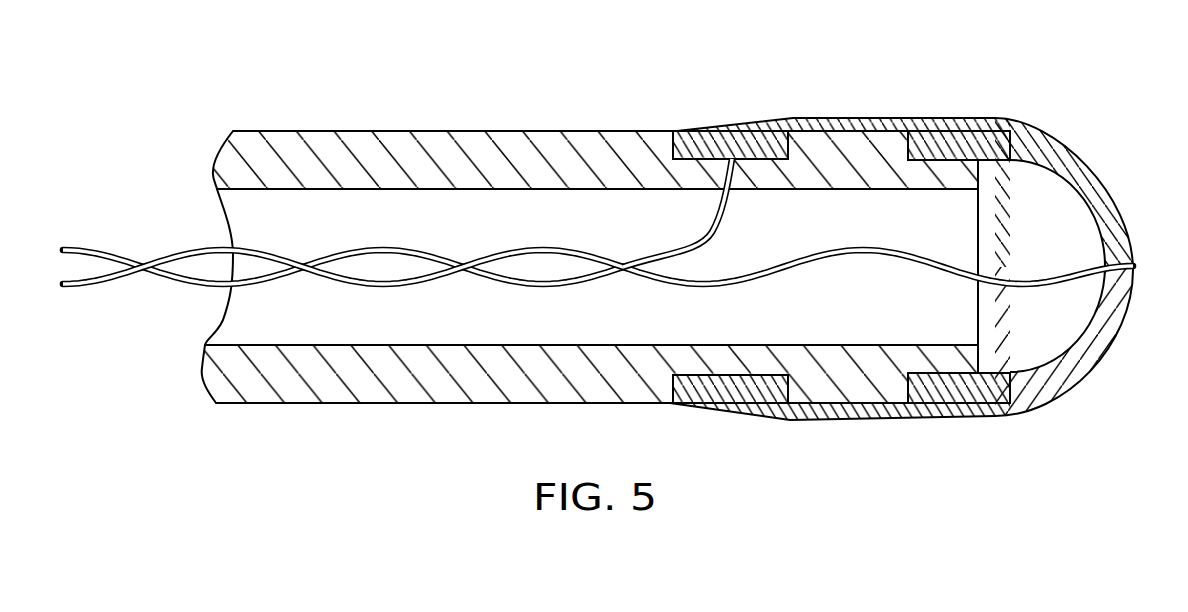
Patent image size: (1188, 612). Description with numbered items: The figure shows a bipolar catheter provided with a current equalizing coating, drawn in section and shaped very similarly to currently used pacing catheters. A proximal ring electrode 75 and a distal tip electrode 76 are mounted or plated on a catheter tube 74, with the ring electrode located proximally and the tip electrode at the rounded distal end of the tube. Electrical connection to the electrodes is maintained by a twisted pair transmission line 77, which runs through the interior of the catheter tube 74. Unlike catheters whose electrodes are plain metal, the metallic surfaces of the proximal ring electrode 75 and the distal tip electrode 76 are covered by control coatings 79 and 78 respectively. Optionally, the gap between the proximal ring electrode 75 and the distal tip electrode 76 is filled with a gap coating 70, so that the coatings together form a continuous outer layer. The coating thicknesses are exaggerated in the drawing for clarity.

The gap coating 70 is at (857, 116).
The catheter tube 74 is at (226, 142).
The proximal ring electrode 75 is at (698, 140).
The distal tip electrode 76 is at (1127, 221).
The twisted pair transmission line 77 is at (143, 263).
The control coating 78 is at (998, 117).
The control coating 79 is at (765, 122).